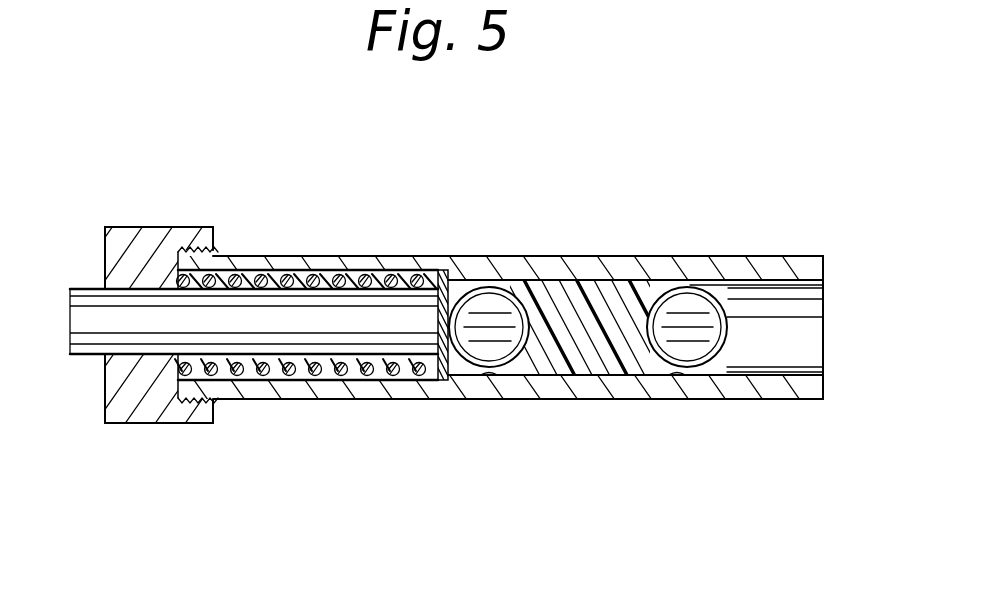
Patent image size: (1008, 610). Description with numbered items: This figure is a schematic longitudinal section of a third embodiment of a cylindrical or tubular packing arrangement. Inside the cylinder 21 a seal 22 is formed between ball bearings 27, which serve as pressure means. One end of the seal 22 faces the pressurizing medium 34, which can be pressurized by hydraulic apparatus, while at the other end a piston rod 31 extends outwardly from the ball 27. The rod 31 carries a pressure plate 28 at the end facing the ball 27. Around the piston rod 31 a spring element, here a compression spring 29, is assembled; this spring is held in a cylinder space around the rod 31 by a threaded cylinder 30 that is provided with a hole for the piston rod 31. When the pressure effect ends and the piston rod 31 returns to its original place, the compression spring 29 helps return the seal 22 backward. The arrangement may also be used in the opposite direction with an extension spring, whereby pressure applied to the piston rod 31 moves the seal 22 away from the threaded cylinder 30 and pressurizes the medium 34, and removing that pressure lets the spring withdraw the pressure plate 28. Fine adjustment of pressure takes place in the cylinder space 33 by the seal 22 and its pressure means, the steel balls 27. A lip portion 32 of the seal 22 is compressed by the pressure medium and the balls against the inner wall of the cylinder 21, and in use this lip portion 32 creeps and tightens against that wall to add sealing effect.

The cylinder 21 is at (768, 270).
The seal 22 is at (601, 290).
The ball bearing 27 is at (494, 305).
The pressure plate 28 is at (450, 283).
The compression spring 29 is at (293, 255).
The threaded cylinder 30 is at (148, 242).
The piston rod 31 is at (76, 310).
The lip portion 32 is at (489, 376).
The cylinder space 33 is at (826, 313).
The pressurizing medium 34 is at (776, 376).